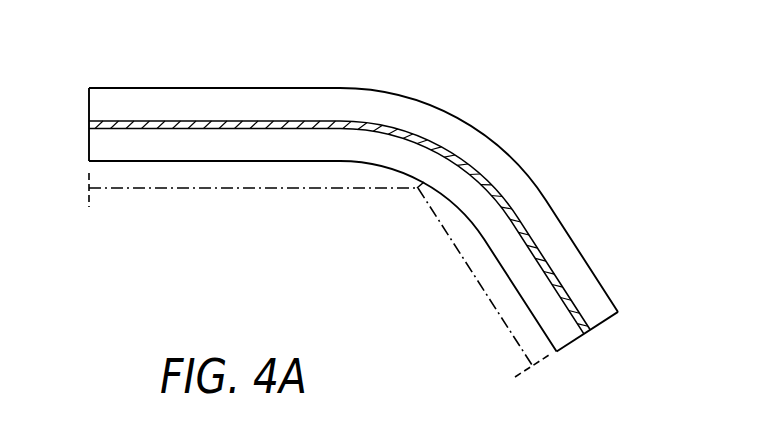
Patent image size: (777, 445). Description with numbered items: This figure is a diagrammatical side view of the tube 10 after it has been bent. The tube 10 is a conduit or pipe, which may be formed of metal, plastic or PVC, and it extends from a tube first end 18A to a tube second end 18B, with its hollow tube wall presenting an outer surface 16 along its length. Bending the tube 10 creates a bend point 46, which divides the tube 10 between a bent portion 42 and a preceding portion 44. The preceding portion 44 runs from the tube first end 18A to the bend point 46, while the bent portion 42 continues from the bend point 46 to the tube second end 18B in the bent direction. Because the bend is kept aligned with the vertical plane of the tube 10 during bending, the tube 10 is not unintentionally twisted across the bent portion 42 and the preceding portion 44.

The tube 10 is at (353, 186).
The outer surface 16 is at (177, 87).
The tube first end 18A is at (89, 140).
The tube second end 18B is at (612, 322).
The bent portion 42 is at (483, 293).
The preceding portion 44 is at (225, 188).
The bend point 46 is at (404, 214).